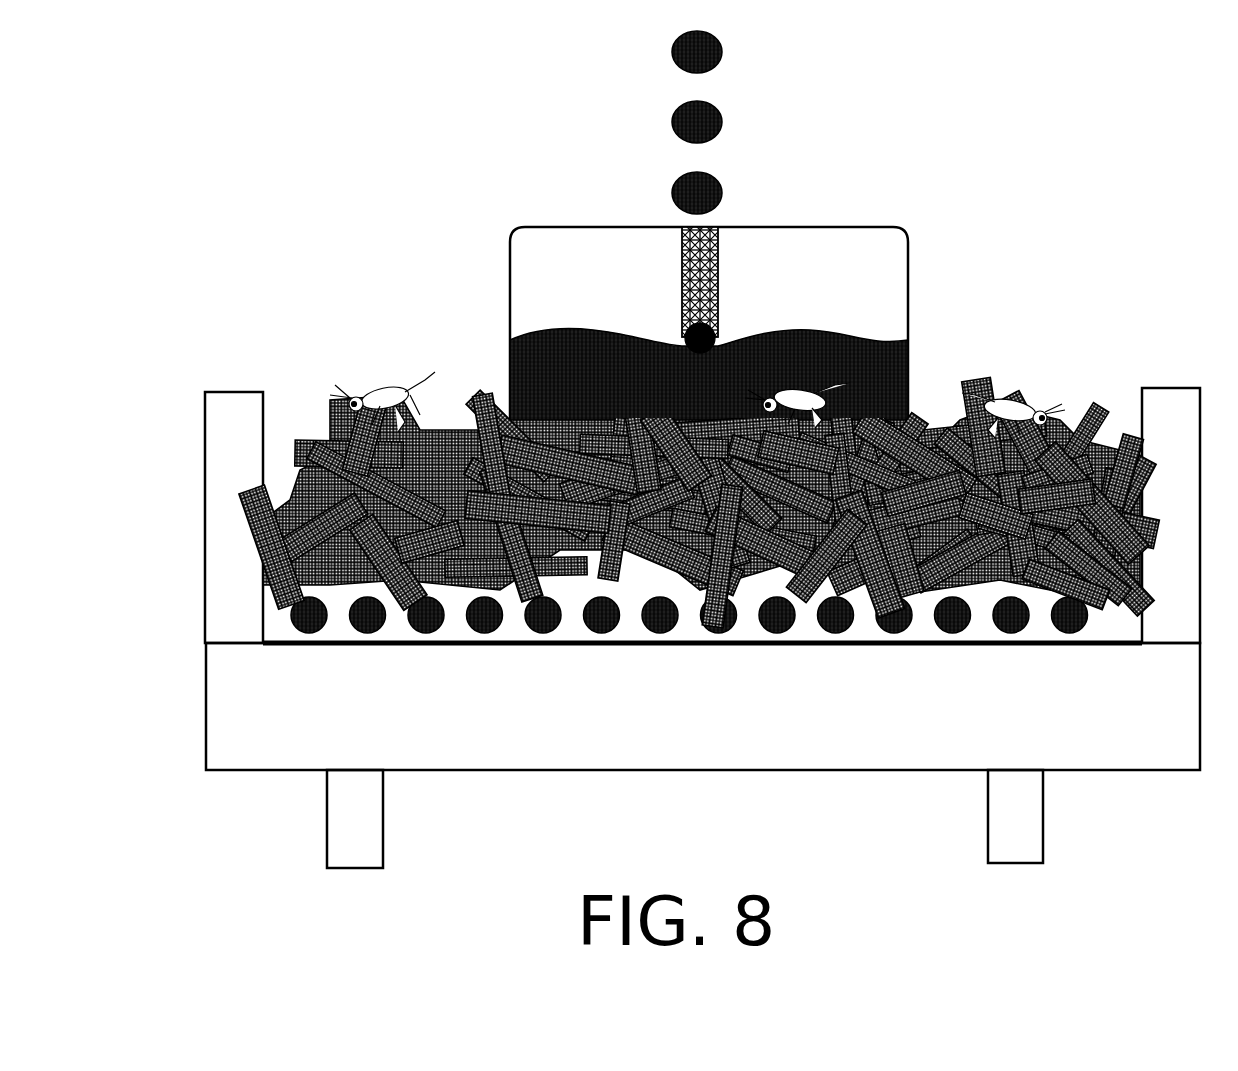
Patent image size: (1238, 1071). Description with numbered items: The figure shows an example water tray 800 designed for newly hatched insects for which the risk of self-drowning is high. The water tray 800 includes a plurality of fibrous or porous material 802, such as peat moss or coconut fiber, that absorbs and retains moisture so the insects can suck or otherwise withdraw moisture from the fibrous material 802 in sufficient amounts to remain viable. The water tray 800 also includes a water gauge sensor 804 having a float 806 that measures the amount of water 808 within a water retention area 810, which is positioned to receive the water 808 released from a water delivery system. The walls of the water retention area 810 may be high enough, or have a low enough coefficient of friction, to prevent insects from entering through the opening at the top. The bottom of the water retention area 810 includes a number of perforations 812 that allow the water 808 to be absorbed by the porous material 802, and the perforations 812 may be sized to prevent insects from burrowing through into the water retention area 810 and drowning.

The water tray 800 is at (207, 127).
The fibrous or porous material 802 is at (318, 448).
The water gauge sensor 804 is at (661, 294).
The float 806 is at (704, 318).
The water 808 is at (655, 132).
The water retention area 810 is at (880, 215).
The perforations 812 is at (360, 630).